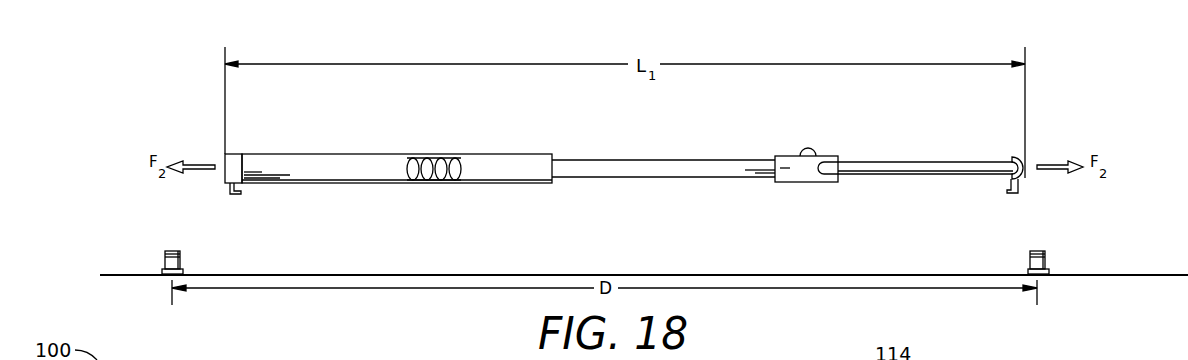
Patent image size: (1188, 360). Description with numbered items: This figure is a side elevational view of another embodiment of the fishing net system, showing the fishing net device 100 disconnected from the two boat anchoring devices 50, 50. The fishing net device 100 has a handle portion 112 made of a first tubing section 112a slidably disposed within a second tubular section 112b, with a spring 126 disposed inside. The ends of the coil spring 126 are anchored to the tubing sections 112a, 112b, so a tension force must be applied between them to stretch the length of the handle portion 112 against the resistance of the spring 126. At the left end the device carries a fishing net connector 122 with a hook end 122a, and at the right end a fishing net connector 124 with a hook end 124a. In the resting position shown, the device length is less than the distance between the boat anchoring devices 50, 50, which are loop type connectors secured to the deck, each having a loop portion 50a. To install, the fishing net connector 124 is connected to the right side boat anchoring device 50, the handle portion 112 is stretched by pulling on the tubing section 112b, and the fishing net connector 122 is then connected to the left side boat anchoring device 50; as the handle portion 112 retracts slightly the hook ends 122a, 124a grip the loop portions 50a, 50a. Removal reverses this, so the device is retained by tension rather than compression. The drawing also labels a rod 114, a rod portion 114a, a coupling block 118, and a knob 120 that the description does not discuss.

The fishing net device 100 is at (176, 93).
The handle portion 112 is at (508, 138).
The first tubing section 112a is at (607, 158).
The second tubular section 112b is at (355, 154).
The rod 114 is at (976, 166).
The rod portion 114a is at (962, 166).
The coupling block 118 is at (785, 165).
The knob 120 is at (813, 149).
The fishing net connector 122 is at (232, 158).
The hook end 122a is at (229, 190).
The fishing net connector 124 is at (1013, 160).
The hook end 124a is at (1022, 184).
The spring 126 is at (418, 180).
The boat anchoring device 50 is at (191, 269).
The loop portion 50a is at (182, 253).